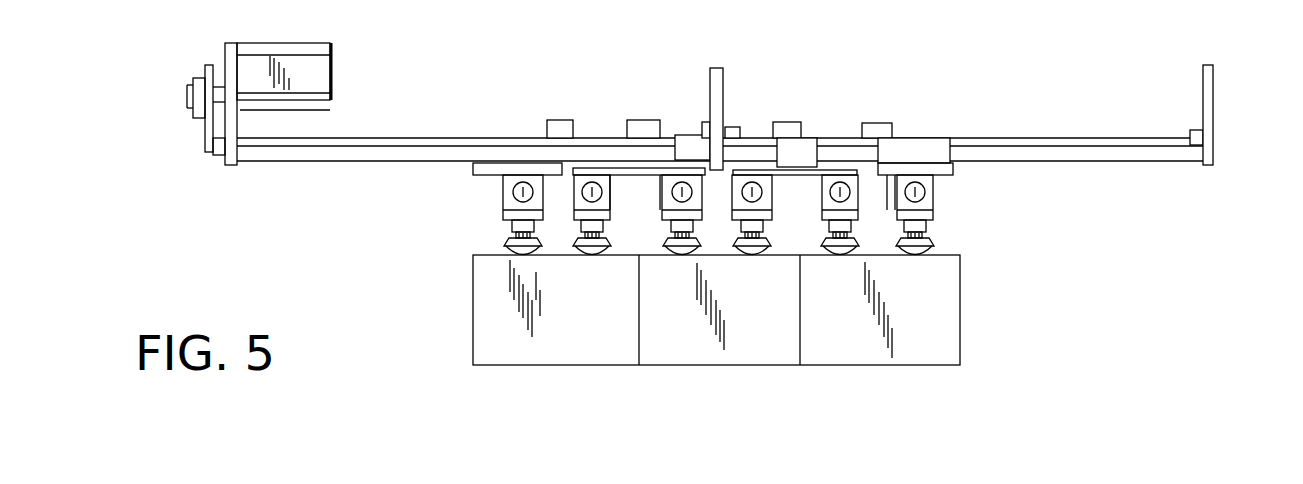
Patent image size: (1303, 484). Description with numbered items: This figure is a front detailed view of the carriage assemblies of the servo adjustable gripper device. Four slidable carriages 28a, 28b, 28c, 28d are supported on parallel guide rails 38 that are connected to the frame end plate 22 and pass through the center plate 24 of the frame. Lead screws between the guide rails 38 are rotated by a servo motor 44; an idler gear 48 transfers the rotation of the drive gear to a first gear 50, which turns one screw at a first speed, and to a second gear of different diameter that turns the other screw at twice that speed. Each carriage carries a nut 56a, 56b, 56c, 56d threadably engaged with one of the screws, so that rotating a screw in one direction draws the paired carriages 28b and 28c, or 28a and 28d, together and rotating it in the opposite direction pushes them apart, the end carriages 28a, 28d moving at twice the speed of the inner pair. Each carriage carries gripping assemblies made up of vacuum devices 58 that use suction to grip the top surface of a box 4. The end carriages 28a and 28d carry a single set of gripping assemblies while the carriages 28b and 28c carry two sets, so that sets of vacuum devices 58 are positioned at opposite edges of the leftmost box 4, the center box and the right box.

The box 4 is at (527, 345).
The frame end plate 22 is at (1203, 105).
The center plate 24 is at (722, 108).
The carriage 28a is at (492, 177).
The carriage 28b is at (633, 177).
The carriage 28c is at (800, 178).
The carriage 28d is at (937, 172).
The guide rail 38 is at (1073, 153).
The servo motor 44 is at (313, 72).
The idler gear 48 is at (198, 125).
The first gear 50 is at (218, 152).
The nut 56a is at (557, 118).
The nut 56b is at (643, 120).
The nut 56c is at (786, 120).
The nut 56d is at (873, 120).
The vacuum device 58 is at (840, 255).